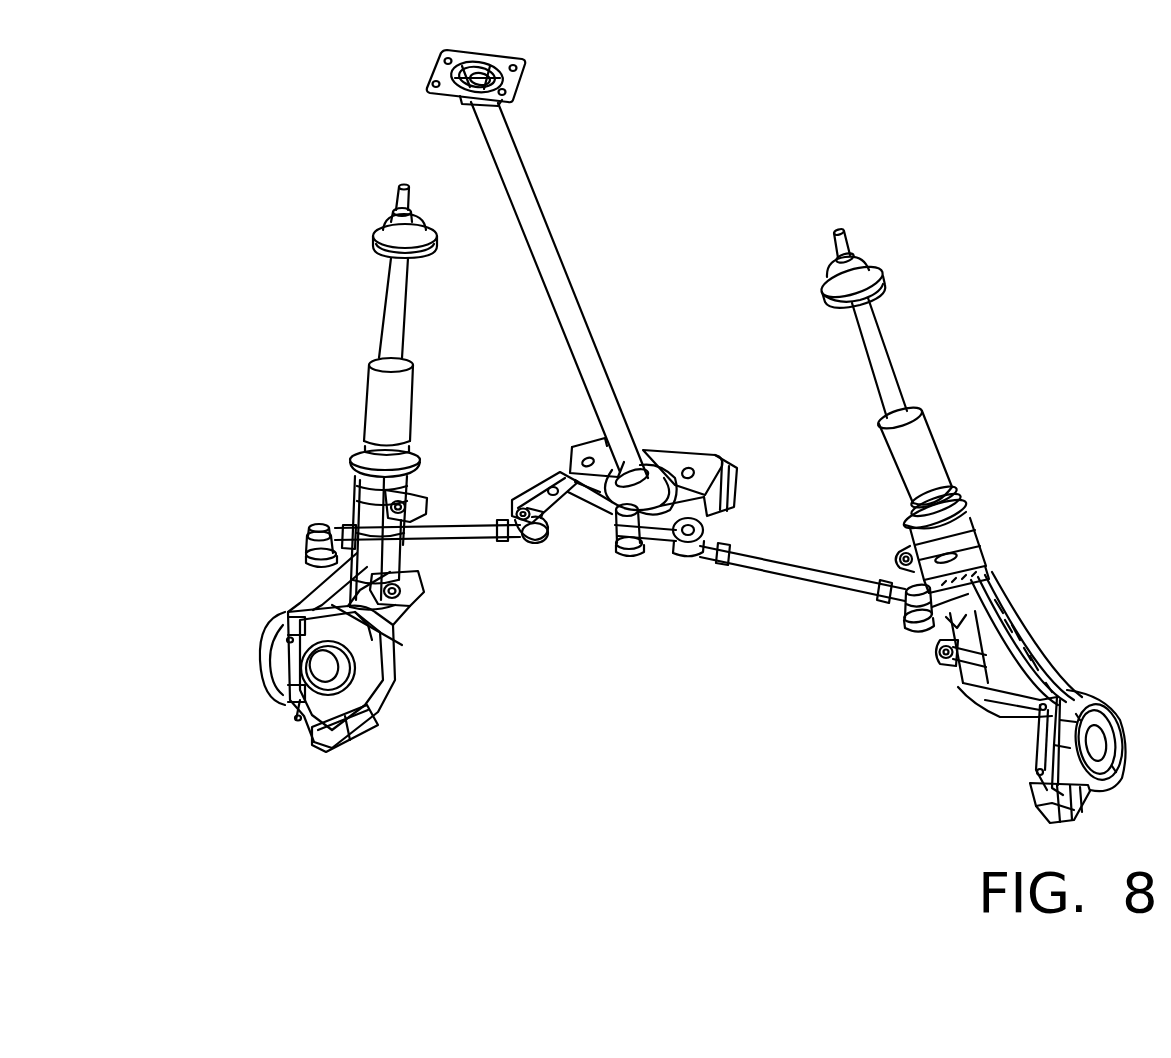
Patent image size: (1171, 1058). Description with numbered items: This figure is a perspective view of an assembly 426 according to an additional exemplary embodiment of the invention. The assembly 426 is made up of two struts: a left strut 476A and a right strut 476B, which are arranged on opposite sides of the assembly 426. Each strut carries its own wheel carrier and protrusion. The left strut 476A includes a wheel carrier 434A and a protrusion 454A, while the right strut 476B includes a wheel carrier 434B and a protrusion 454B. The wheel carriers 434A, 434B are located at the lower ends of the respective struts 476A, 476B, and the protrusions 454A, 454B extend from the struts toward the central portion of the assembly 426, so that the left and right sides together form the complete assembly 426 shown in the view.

The assembly 426 is at (718, 777).
The left strut 476A is at (352, 482).
The right strut 476B is at (977, 530).
The protrusion 454A is at (308, 558).
The protrusion 454B is at (905, 622).
The wheel carrier 434A is at (266, 693).
The wheel carrier 434B is at (1103, 700).